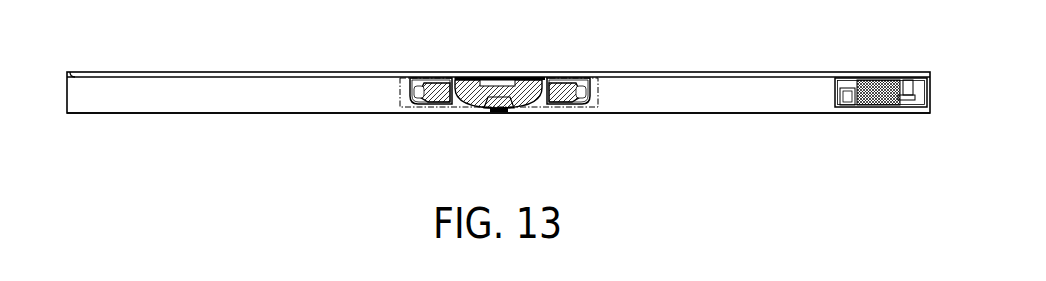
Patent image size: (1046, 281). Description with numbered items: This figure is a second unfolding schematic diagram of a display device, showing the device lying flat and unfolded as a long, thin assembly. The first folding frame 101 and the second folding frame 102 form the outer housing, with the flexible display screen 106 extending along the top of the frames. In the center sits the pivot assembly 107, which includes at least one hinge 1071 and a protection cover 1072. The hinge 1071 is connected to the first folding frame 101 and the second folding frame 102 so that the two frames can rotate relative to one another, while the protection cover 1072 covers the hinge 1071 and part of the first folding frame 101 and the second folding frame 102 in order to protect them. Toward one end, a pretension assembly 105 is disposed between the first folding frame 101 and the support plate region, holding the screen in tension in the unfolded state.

The first folding frame 101 is at (688, 88).
The second folding frame 102 is at (255, 108).
The pretension assembly 105 is at (917, 110).
The flexible display screen 106 is at (358, 72).
The pivot assembly 107 is at (455, 112).
The hinge 1071 is at (578, 98).
The protection cover 1072 is at (530, 110).